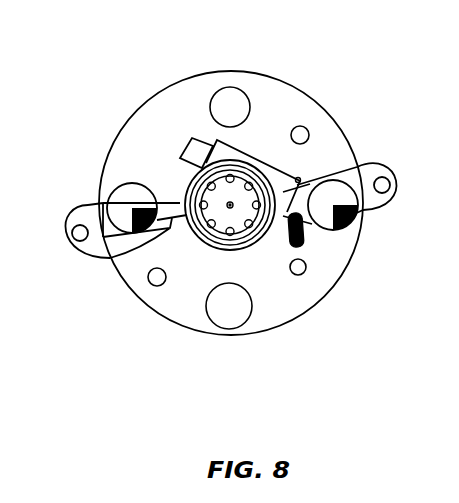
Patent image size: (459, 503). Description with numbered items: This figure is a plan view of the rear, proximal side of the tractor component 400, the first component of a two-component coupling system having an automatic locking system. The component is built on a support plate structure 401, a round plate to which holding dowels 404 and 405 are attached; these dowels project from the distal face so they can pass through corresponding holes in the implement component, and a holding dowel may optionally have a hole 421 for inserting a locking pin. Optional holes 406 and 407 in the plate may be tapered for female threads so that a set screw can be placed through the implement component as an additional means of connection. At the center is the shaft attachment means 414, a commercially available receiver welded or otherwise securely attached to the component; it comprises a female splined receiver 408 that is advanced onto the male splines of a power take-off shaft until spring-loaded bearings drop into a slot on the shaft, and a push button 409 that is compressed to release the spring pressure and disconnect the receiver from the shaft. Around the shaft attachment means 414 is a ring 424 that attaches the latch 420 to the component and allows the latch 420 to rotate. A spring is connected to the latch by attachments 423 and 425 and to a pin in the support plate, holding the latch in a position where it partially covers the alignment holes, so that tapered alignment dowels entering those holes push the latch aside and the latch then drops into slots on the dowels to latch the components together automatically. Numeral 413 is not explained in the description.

The tractor component 400 is at (129, 44).
The support plate structure 401 is at (110, 152).
The holding dowel 404 is at (229, 100).
The holding dowel 405 is at (230, 308).
The optional hole 406 is at (300, 133).
The optional hole 407 is at (155, 278).
The female splined receiver 408 is at (252, 144).
The push button 409 is at (185, 148).
The shaft 413 is at (215, 248).
The shaft attachment means 414 is at (223, 223).
The latch 420 is at (170, 230).
The hole 421 is at (222, 255).
The attachment 423 is at (297, 252).
The ring 424 is at (298, 180).
The attachment 425 is at (307, 268).